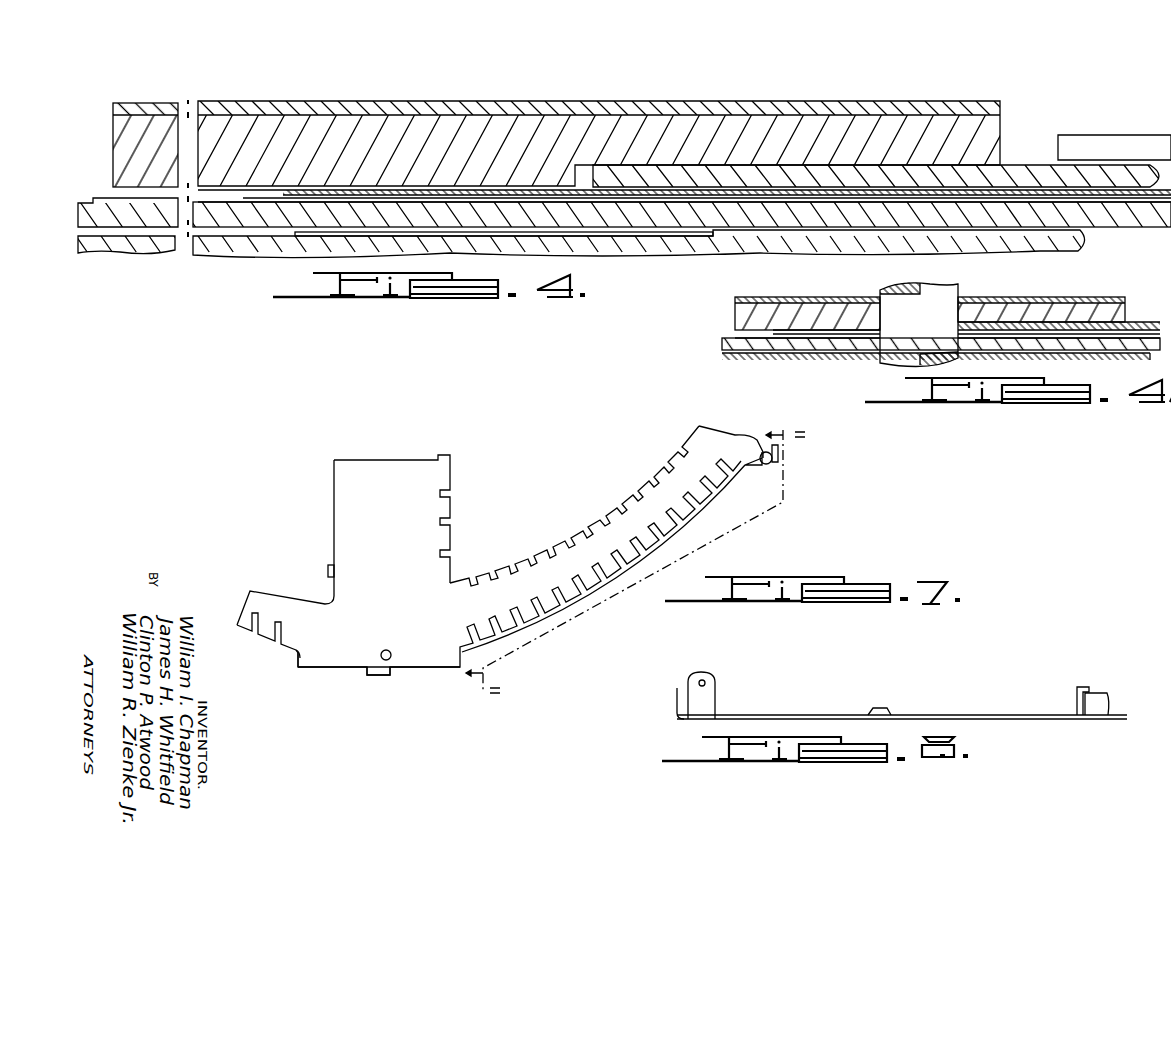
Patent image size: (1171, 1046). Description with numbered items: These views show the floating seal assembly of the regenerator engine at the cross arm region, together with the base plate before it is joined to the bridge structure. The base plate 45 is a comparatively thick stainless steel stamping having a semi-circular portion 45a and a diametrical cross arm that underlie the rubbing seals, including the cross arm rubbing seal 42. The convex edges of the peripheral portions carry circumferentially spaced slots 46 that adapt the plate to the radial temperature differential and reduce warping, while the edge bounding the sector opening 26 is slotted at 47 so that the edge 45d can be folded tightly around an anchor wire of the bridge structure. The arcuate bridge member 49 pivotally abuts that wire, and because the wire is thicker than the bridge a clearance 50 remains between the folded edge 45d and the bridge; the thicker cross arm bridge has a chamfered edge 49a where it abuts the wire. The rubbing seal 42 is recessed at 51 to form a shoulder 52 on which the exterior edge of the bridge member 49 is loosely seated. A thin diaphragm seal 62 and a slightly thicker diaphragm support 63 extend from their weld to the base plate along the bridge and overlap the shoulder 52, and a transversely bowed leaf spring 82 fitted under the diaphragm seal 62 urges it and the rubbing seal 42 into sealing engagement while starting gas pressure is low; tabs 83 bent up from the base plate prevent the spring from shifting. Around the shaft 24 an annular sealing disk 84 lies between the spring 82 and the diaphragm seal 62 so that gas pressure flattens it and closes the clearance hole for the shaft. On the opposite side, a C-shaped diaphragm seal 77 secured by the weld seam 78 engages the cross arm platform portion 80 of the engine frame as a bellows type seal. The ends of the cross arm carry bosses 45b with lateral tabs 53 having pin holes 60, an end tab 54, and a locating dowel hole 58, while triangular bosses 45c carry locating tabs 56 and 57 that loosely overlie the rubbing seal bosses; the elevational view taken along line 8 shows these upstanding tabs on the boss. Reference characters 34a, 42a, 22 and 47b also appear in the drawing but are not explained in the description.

In FIG. 4, the cross arm rubbing seal 42 is at (355, 122).
In FIG. 4A, the cross arm rubbing seal 42 is at (1085, 305).
In FIG. 4, the supplementary leaf spring 82 is at (250, 186).
In FIG. 4A, the supplementary leaf spring 82 is at (735, 338).
In FIG. 4, the shoulder 52 is at (585, 170).
In FIG. 4, the diaphragm seal 62 is at (437, 186).
In FIG. 4A, the diaphragm seal 62 is at (1100, 345).
In FIG. 4, the diaphragm support 63 is at (517, 186).
In FIG. 4, the recess 51 is at (922, 160).
In FIG. 4, the base plate 45 is at (935, 215).
In FIG. 7, the base plate 45 is at (345, 490).
In FIG. 8, the base plate 45 is at (932, 712).
In FIG. 4, the arcuate bridge member 49 is at (1022, 170).
In FIG. 4A, the arcuate bridge member 49 is at (1148, 312).
In FIG. 4, the clearance 50 is at (1078, 158).
In FIG. 4, the slotted edge 45d is at (1112, 160).
In FIG. 4, the chamfered edge 49a is at (1128, 176).
In FIG. 4, the cross arm platform portion 80 is at (1035, 238).
In FIG. 4, the C-shaped diaphragm seal 77 is at (600, 236).
In FIG. 4, the weld seam 78 is at (712, 231).
In FIG. 4A, the left plate section 34a is at (855, 320).
In FIG. 4A, the plate section 42a is at (1040, 300).
In FIG. 4A, the shaft 24 is at (882, 292).
In FIG. 4A, the annular sealing disk 84 is at (1015, 342).
In FIG. 7, the slots 47 is at (522, 577).
In FIG. 7, the tab 47b is at (455, 462).
In FIG. 7, the sector opening 26 is at (560, 488).
In FIG. 7, the body 22 is at (290, 541).
In FIG. 7, the semi-circular base plate portion 45a is at (248, 598).
In FIG. 7, the tabs 83 is at (328, 571).
In FIG. 8, the tabs 83 is at (880, 707).
In FIG. 7, the slots 46 is at (282, 635).
In FIG. 7, the locating dowel hole 58 is at (390, 650).
In FIG. 7, the lateral tabs 53 is at (300, 660).
In FIG. 8, the lateral tabs 53 is at (716, 702).
In FIG. 7, the bosses 45b is at (338, 662).
In FIG. 7, the end tab 54 is at (380, 674).
In FIG. 8, the end tab 54 is at (676, 705).
In FIG. 7, the triangular bosses 45c is at (755, 445).
In FIG. 7, the locating tab 56 is at (775, 457).
In FIG. 8, the locating tab 56 is at (1105, 700).
In FIG. 7, the locating tab 57 is at (775, 468).
In FIG. 8, the locating tab 57 is at (1076, 696).
In FIG. 7, the section line 8— 8 is at (631, 556).
In FIG. 8, the pin holes 60 is at (708, 695).